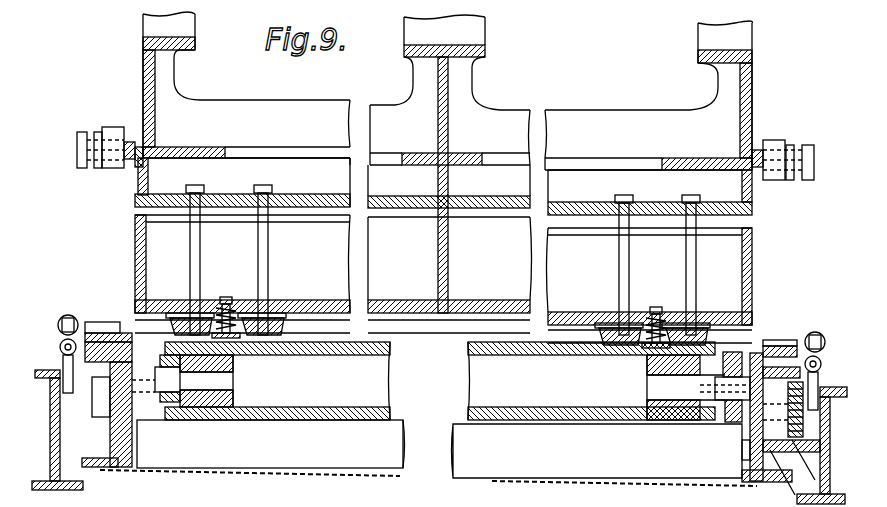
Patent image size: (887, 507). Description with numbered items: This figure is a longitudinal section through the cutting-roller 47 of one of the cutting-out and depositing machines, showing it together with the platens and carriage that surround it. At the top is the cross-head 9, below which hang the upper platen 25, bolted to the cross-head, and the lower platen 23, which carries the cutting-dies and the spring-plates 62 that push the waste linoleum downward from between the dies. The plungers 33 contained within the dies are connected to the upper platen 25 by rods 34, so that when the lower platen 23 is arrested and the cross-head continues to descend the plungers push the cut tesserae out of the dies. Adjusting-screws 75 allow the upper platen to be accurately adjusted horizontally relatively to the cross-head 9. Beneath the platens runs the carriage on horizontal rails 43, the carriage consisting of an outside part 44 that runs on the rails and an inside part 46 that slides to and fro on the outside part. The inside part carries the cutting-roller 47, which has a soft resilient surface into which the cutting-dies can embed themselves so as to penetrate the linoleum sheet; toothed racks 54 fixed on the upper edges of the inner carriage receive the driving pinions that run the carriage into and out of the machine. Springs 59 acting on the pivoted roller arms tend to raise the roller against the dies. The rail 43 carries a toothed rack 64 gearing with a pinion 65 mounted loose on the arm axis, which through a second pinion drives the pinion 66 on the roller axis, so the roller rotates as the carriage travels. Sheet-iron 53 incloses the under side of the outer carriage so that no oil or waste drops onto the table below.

The cross-head 9 is at (447, 162).
The lower platen 23 is at (443, 279).
The upper platen 25 is at (100, 180).
The plungers 33 is at (272, 320).
The rods 34 is at (196, 258).
The horizontal rails 43 is at (440, 437).
The outside part of carriage 44 is at (118, 404).
The inside part of carriage 46 is at (157, 376).
The cutting-roller 47 is at (386, 384).
The sheet-iron 53 is at (310, 476).
The toothed racks 54 is at (442, 390).
The springs 59 is at (437, 354).
The spring-plates 62 is at (238, 308).
The toothed rack 64 is at (790, 480).
The pinion 65 is at (750, 440).
The pinion 66 is at (750, 345).
The adjusting-screws 75 is at (786, 198).